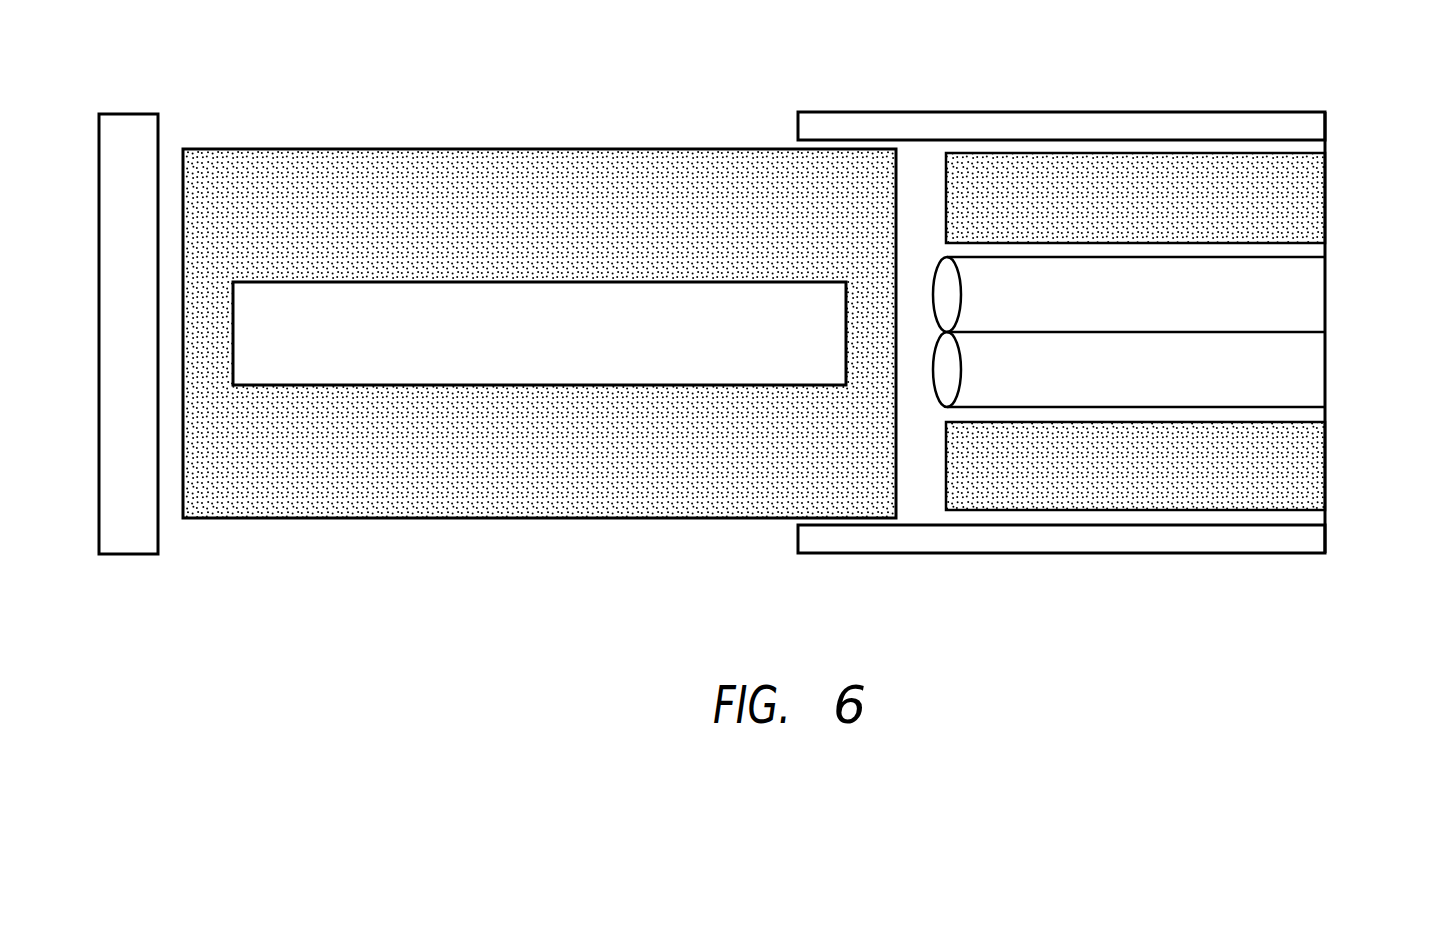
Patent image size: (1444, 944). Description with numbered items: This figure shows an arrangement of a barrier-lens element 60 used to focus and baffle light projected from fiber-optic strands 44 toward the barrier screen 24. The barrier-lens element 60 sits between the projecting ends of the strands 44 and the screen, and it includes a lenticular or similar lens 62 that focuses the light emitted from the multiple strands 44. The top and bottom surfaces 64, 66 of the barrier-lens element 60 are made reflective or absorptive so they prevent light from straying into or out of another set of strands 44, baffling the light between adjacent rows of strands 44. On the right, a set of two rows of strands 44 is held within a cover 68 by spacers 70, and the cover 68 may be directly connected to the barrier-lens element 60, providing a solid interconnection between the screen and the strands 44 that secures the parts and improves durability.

The barrier screen 24 is at (136, 575).
The barrier-lens element 60 is at (539, 362).
The lenticular lens 62 is at (421, 148).
The top surface 64 is at (559, 151).
The bottom surface 66 is at (558, 513).
The cover 68 is at (1069, 112).
The spacer 70 is at (1343, 486).
The fiber-optic strand 44 is at (1290, 293).